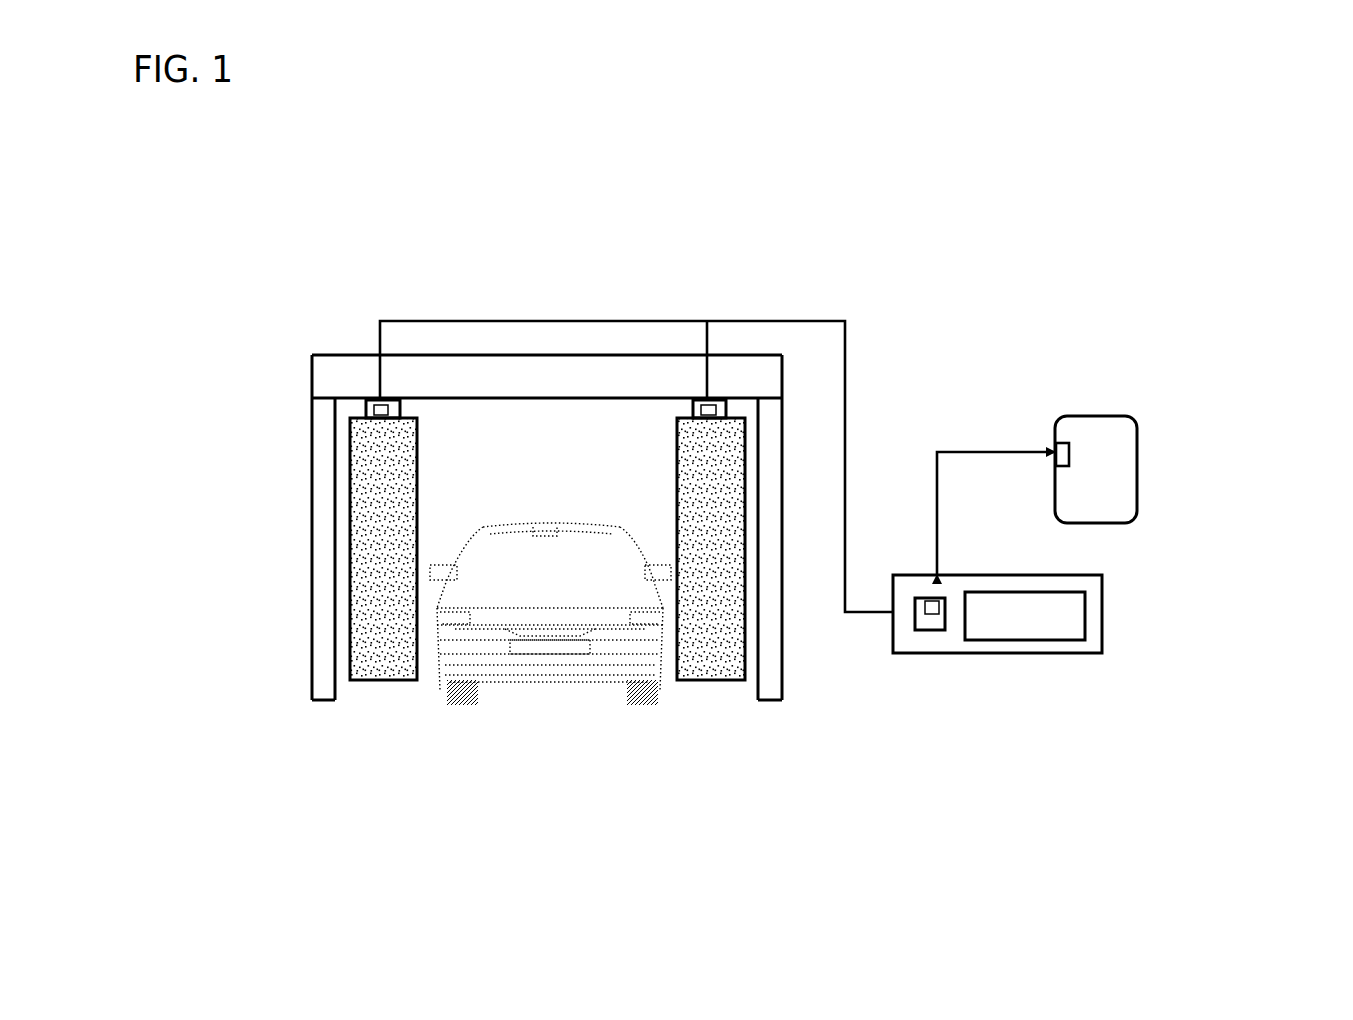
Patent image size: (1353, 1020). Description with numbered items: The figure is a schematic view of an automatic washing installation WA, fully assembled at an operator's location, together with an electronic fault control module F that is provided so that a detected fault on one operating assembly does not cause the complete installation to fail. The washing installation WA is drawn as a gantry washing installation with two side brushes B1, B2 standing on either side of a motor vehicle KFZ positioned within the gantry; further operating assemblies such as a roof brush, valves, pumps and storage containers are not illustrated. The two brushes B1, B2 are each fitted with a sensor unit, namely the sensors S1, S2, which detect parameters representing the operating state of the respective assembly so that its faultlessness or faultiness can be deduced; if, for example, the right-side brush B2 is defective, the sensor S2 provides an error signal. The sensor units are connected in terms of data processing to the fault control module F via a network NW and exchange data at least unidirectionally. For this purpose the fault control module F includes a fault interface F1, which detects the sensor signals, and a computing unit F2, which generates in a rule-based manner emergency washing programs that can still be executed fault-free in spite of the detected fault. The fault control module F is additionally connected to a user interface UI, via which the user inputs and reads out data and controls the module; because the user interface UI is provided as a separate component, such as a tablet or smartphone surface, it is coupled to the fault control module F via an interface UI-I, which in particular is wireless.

The washing installation WA is at (303, 314).
The side brush B1 is at (397, 660).
The side brush B2 is at (713, 660).
The sensor S1 is at (366, 404).
The sensor S2 is at (711, 399).
The network NW is at (848, 339).
The motor vehicle KFZ is at (513, 648).
The fault control module F is at (1103, 640).
The fault interface F1 is at (932, 630).
The computing unit F2 is at (1032, 640).
The user interface UI is at (1138, 448).
The interface UI-I is at (1070, 455).